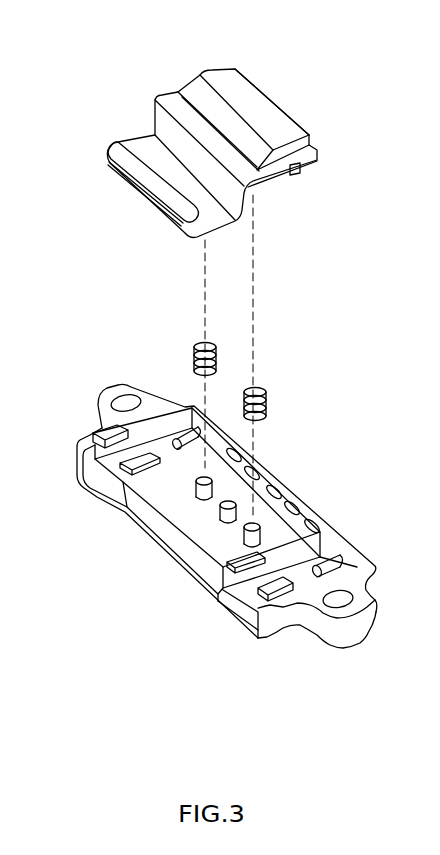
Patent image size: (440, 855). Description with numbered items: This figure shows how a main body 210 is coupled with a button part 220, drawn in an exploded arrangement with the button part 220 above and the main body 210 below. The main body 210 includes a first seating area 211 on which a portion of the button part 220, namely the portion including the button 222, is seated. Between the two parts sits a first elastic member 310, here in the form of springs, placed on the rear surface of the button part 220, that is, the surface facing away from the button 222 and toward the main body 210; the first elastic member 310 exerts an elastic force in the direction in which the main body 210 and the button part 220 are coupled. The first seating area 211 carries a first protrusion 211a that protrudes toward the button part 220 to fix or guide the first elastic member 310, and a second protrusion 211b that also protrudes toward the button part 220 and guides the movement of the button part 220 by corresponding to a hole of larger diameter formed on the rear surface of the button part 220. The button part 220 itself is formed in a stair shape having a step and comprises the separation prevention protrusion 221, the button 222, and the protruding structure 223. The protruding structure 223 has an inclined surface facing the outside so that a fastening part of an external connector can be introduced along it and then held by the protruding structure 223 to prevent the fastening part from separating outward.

The main body 210 is at (322, 490).
The first seating area 211 is at (207, 517).
The first protrusion 211a is at (195, 514).
The second protrusion 211b is at (215, 521).
The button part 220 is at (286, 93).
The separation prevention protrusion 221 is at (298, 178).
The button 222 is at (232, 88).
The protruding structure 223 is at (158, 184).
The first elastic member 310 is at (218, 357).